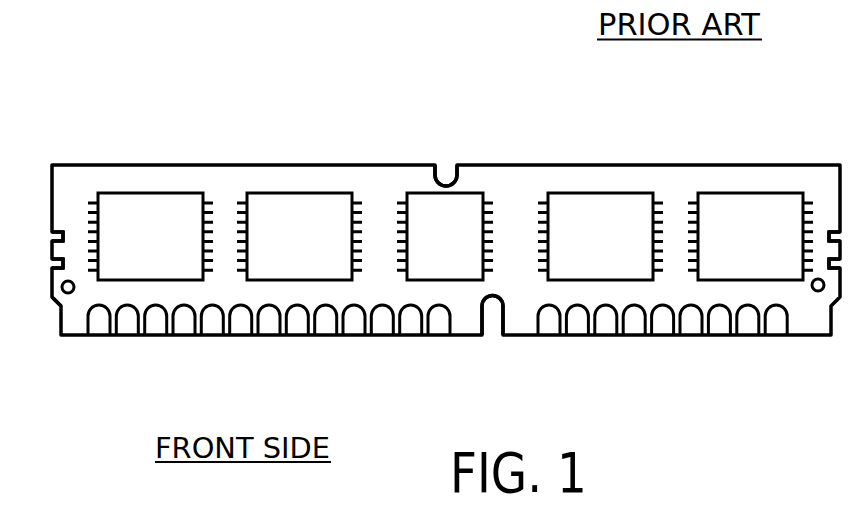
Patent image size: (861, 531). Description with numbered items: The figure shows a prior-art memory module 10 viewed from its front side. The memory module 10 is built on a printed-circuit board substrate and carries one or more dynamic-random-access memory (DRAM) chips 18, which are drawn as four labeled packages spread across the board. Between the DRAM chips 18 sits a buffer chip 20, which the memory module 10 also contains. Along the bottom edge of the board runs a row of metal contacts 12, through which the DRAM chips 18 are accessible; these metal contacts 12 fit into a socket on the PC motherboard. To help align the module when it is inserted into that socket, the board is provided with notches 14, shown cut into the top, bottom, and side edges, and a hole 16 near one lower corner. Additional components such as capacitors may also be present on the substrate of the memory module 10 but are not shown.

The memory module 10 is at (532, 206).
The metal contacts 12 is at (325, 323).
The notches 14 is at (445, 160).
The hole 16 is at (57, 298).
The dynamic-random-access memory (DRAM) chips 18 is at (450, 236).
The buffer chip 20 is at (433, 265).